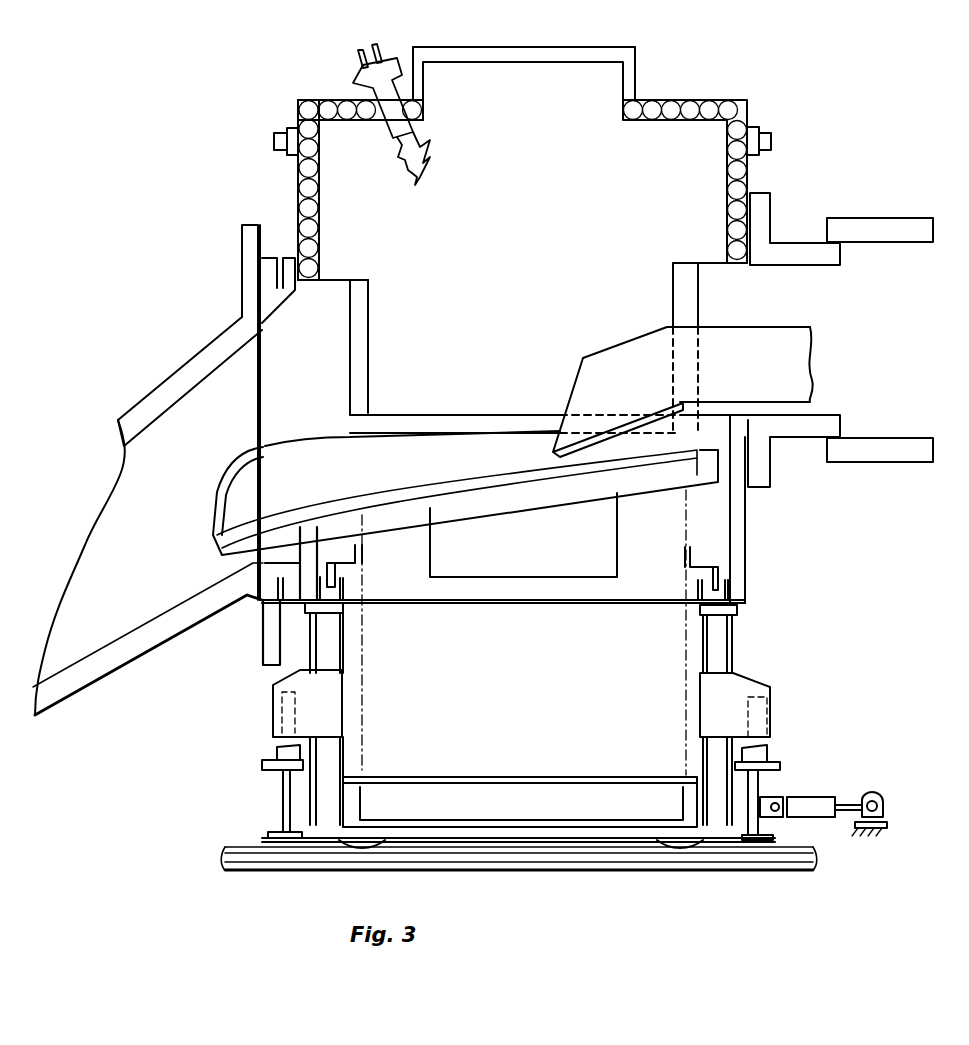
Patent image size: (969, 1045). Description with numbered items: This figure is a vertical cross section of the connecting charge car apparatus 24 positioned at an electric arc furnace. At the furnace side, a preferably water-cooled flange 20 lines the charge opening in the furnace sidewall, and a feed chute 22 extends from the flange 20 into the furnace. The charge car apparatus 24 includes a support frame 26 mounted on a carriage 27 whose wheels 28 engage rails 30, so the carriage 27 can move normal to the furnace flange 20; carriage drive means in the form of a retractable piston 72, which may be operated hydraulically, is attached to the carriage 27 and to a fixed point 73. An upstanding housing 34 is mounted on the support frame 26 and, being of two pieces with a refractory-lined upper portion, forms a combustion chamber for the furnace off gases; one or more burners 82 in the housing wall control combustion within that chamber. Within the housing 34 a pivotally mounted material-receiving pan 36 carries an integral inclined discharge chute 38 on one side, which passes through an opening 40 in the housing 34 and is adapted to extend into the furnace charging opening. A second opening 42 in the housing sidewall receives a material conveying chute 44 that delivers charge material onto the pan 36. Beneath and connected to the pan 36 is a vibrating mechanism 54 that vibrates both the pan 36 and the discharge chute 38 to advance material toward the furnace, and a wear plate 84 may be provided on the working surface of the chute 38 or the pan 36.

The flange 20 is at (242, 250).
The feed chute 22 is at (100, 653).
The connecting charge car apparatus 24 is at (757, 567).
The support frame 26 is at (735, 655).
The carriage 27 is at (762, 788).
The wheels 28 is at (700, 858).
The rails 30 is at (800, 835).
The housing 34 is at (748, 175).
The material-receiving pan 36 is at (406, 512).
The discharge chute 38 is at (232, 516).
The opening 40 is at (336, 283).
The second opening 42 is at (740, 267).
The material conveying chute 44 is at (640, 348).
The vibrating mechanism 54 is at (545, 556).
The retractable piston 72 is at (828, 797).
The fixed point 73 is at (884, 803).
The burner 82 is at (386, 62).
The wear plate 84 is at (497, 472).